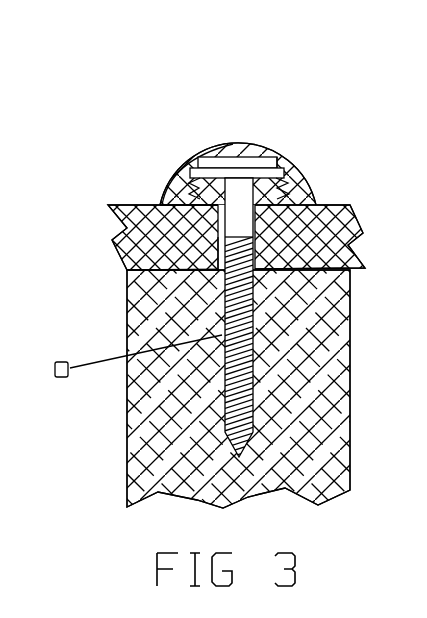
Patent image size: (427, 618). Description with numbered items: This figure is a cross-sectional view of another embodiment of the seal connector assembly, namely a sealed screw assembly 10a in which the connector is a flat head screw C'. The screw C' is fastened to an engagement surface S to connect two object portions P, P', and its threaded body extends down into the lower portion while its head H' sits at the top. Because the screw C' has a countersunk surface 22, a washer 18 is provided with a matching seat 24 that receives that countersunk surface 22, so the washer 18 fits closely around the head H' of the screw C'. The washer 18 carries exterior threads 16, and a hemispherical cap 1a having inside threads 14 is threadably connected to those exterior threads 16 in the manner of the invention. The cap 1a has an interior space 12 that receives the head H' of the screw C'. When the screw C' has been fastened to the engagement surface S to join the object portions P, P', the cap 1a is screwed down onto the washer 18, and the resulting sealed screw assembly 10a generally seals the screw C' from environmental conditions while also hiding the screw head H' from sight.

The sealed screw assembly 10a is at (243, 134).
The cap 1a is at (216, 142).
The interior space 12 is at (283, 176).
The matching seat 24 is at (191, 184).
The inside threads 14 is at (279, 166).
The washer 18 is at (274, 179).
The exterior threads 16 is at (270, 186).
The countersunk surface 22 is at (220, 212).
The engagement surface S is at (163, 203).
The object portion P is at (261, 237).
The object portion P' is at (213, 389).
The flat head screw C' is at (133, 287).
The head H' is at (338, 146).